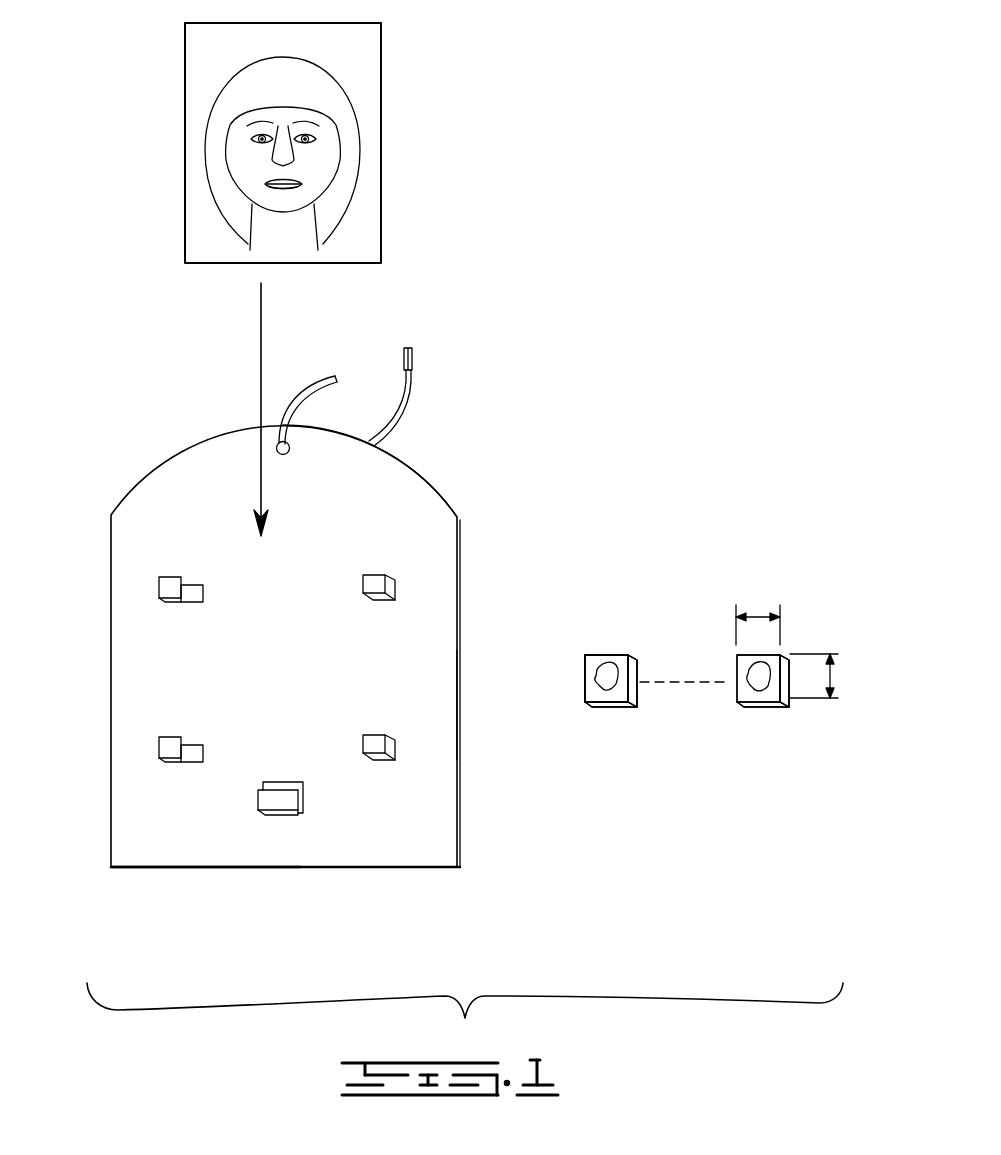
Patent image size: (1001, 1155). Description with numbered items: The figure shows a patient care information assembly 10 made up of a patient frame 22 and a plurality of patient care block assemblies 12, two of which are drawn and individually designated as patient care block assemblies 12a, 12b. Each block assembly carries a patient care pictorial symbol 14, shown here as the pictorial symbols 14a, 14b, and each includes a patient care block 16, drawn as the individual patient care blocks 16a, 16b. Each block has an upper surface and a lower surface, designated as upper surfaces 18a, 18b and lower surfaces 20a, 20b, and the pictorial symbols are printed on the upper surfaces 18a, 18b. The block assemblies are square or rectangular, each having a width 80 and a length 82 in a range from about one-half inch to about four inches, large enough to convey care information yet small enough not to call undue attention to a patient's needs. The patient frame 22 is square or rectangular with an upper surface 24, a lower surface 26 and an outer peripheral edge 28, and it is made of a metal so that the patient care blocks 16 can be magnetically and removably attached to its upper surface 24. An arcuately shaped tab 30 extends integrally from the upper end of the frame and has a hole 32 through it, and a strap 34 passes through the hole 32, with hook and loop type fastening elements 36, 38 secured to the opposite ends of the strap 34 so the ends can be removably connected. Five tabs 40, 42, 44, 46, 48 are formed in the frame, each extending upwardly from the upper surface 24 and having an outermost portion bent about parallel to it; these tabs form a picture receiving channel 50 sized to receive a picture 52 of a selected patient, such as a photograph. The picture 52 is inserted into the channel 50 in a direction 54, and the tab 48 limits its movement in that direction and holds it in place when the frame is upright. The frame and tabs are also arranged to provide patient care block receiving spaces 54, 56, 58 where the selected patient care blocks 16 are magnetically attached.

The patient care information assembly 10 is at (576, 322).
The patient care block assembly 12 is at (635, 707).
The patient care block assembly 12a is at (620, 655).
The patient care block assembly 12b is at (767, 648).
The patient care pictorial symbol 14 is at (590, 688).
The patient care pictorial symbol 14a is at (598, 663).
The patient care pictorial symbol 14b is at (767, 677).
The patient care block 16 is at (750, 705).
The patient care block 16a is at (633, 658).
The patient care block 16b is at (780, 687).
The upper surface 18a is at (622, 695).
The upper surface 18b is at (773, 695).
The lower surface 20a is at (617, 703).
The lower surface 20b is at (763, 705).
The patient frame 22 is at (111, 537).
The upper surface 24 is at (407, 825).
The lower surface 26 is at (460, 730).
The outer peripheral edge 28 is at (461, 612).
The arcuately shaped tab 30 is at (420, 475).
The hole 32 is at (277, 444).
The strap 34 is at (405, 398).
The hook and loop type fastening element 36 is at (338, 390).
The hook and loop type fastening element 38 is at (404, 352).
The tab 40 is at (159, 583).
The tab 42 is at (163, 752).
The tab 44 is at (390, 578).
The tab 46 is at (395, 742).
The tab 48 is at (280, 810).
The picture receiving channel 50 is at (277, 582).
The picture 52 is at (184, 137).
The direction 54 is at (261, 330).
The patient care block receiving space 56 is at (423, 682).
The patient care block receiving space 58 is at (210, 845).
The width 80 is at (758, 613).
The length 82 is at (833, 675).